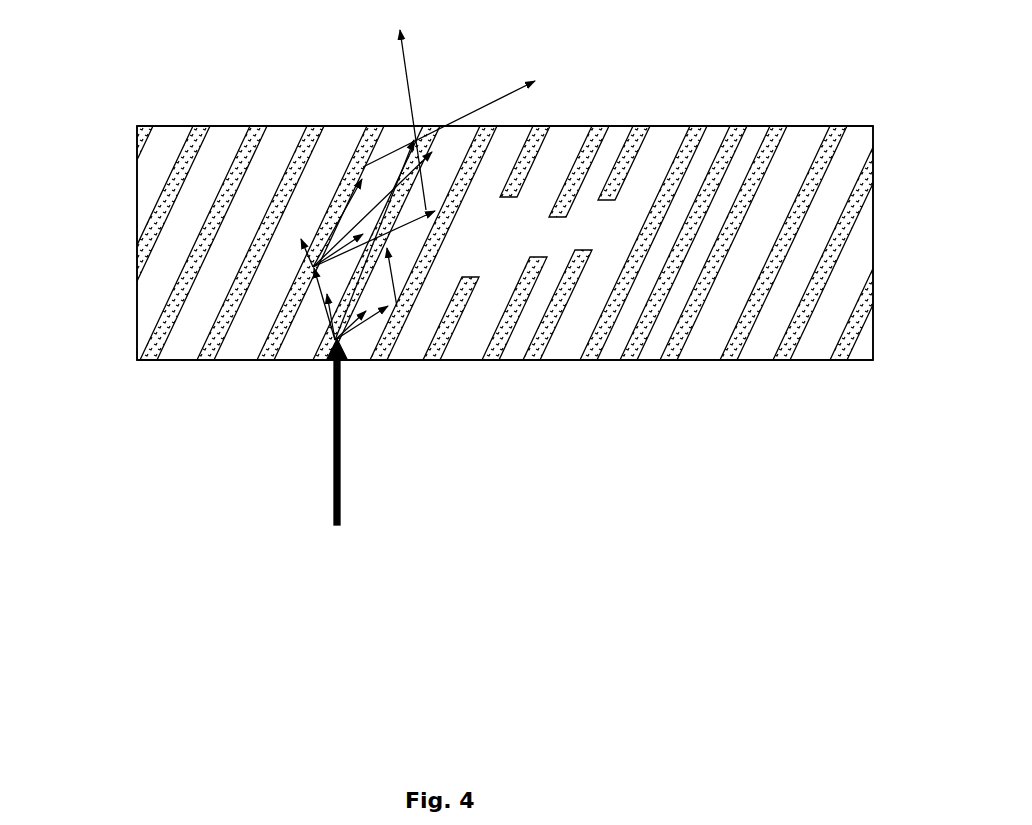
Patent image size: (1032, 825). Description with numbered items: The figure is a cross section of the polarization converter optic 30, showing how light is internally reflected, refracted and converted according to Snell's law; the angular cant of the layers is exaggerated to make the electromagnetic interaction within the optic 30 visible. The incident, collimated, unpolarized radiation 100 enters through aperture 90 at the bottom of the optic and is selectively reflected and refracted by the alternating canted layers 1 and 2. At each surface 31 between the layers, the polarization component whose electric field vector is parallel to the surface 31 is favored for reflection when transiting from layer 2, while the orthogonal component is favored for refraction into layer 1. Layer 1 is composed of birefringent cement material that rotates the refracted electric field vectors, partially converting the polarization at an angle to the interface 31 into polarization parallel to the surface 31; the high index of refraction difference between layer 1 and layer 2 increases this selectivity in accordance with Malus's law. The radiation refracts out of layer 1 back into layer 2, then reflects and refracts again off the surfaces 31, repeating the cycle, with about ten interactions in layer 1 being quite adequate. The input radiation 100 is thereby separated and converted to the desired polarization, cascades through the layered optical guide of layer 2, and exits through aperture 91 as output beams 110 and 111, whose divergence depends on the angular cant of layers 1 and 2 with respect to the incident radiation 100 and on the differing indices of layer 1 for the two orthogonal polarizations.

The layer 1 is at (322, 360).
The layer 2 is at (283, 360).
The polarization converter optic 30 is at (110, 262).
The surface 31 is at (232, 136).
The aperture 90 is at (238, 368).
The aperture 91 is at (764, 121).
The incident radiation 100 is at (330, 489).
The output radiation 110 is at (413, 115).
The output radiation 111 is at (524, 87).